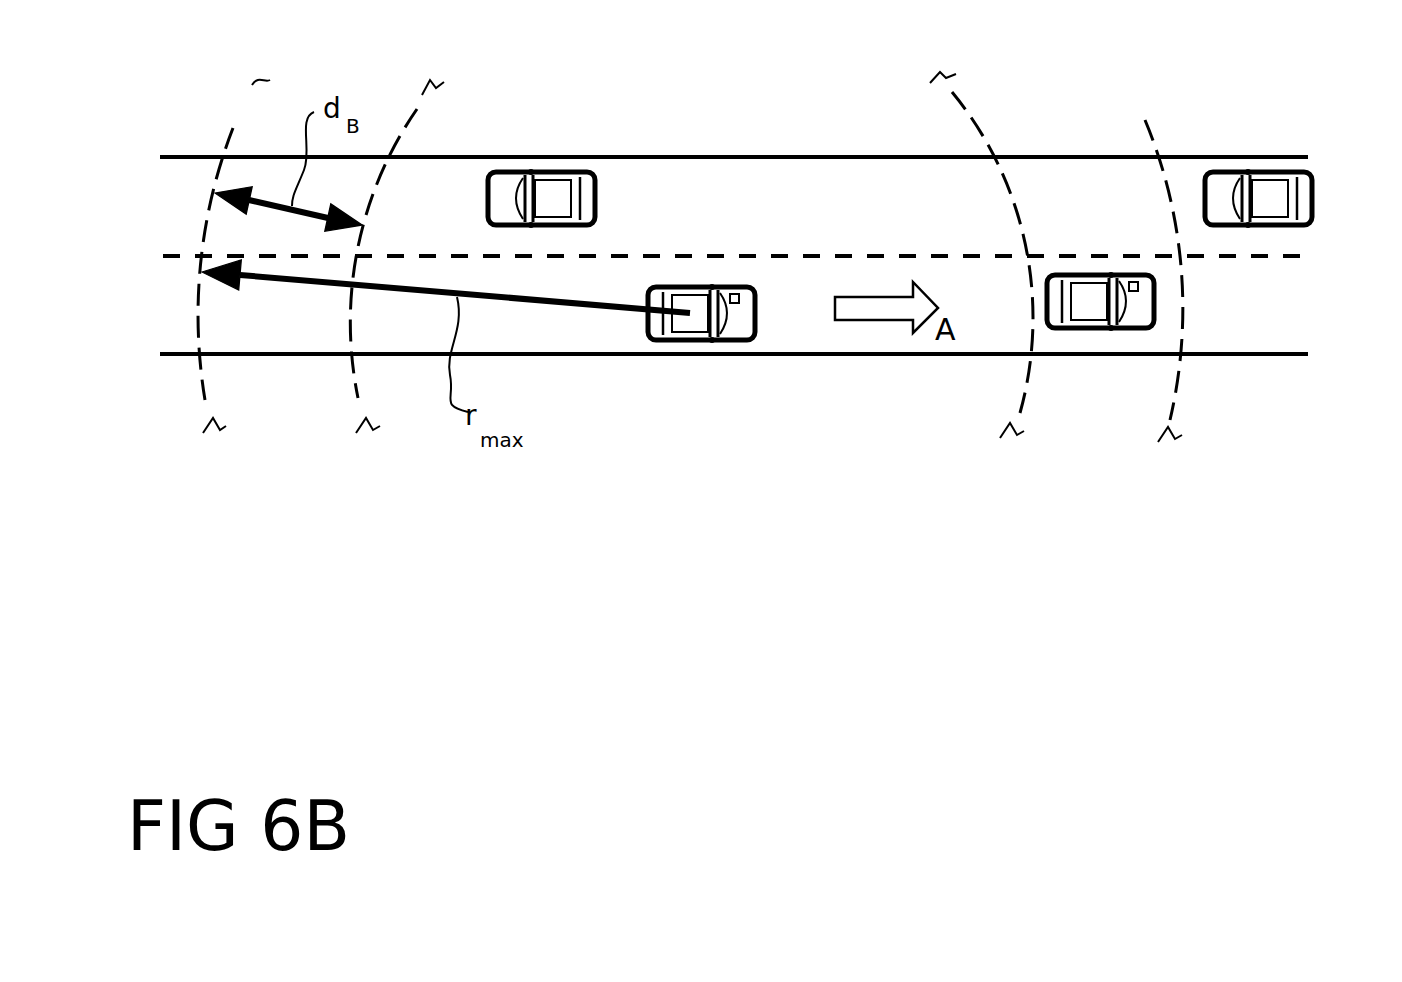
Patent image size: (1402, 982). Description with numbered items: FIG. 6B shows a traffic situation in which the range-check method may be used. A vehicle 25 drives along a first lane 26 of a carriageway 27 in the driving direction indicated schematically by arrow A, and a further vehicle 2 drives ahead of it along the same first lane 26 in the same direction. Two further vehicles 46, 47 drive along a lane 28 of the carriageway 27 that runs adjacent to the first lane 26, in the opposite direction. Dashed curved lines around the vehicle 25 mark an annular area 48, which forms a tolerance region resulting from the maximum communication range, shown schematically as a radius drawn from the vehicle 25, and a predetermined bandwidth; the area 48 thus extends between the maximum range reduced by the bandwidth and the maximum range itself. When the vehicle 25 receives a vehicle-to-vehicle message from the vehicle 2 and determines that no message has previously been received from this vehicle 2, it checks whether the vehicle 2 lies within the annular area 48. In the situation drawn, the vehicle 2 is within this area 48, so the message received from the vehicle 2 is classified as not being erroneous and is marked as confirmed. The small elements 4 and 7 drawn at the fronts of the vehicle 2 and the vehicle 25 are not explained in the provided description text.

The further vehicle 2 is at (1078, 303).
The sensor of preceding vehicle 4 is at (1138, 330).
The sensor of ego vehicle 7 is at (755, 325).
The vehicle 25 is at (700, 340).
The first lane 26 is at (1215, 337).
The carriageway 27 is at (1320, 318).
The lane 28 is at (797, 198).
The further vehicle 46 is at (1276, 196).
The further vehicle 47 is at (556, 190).
The annular area 48 is at (266, 108).